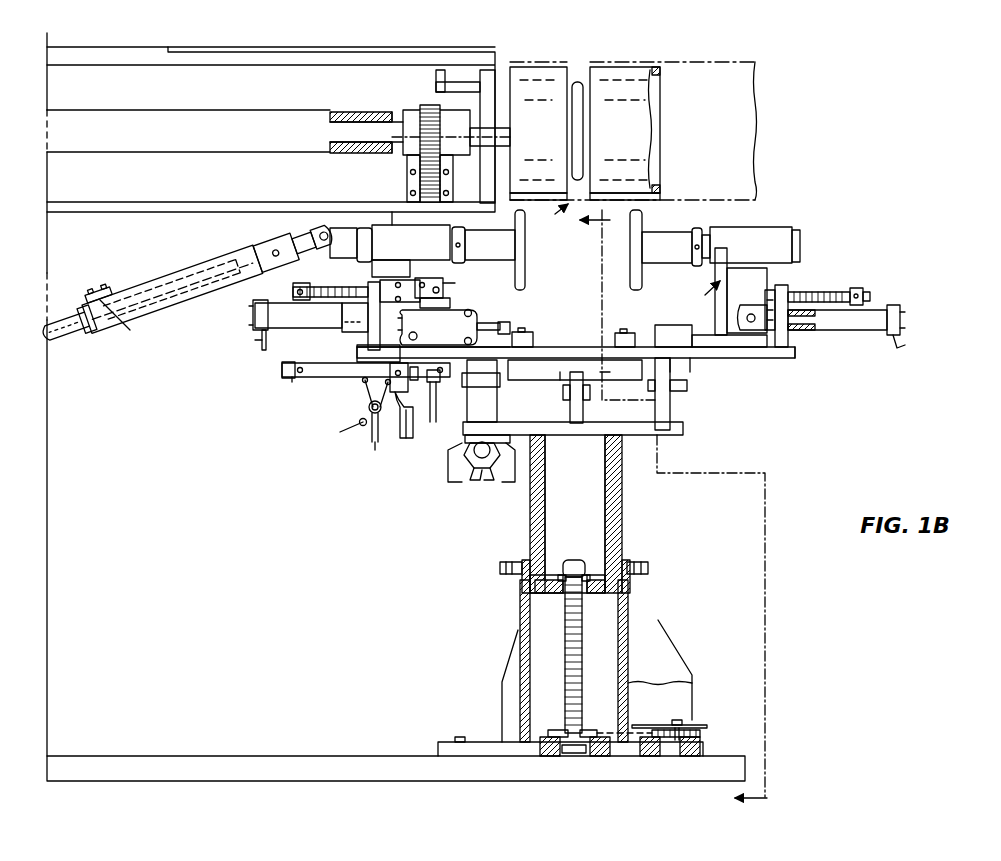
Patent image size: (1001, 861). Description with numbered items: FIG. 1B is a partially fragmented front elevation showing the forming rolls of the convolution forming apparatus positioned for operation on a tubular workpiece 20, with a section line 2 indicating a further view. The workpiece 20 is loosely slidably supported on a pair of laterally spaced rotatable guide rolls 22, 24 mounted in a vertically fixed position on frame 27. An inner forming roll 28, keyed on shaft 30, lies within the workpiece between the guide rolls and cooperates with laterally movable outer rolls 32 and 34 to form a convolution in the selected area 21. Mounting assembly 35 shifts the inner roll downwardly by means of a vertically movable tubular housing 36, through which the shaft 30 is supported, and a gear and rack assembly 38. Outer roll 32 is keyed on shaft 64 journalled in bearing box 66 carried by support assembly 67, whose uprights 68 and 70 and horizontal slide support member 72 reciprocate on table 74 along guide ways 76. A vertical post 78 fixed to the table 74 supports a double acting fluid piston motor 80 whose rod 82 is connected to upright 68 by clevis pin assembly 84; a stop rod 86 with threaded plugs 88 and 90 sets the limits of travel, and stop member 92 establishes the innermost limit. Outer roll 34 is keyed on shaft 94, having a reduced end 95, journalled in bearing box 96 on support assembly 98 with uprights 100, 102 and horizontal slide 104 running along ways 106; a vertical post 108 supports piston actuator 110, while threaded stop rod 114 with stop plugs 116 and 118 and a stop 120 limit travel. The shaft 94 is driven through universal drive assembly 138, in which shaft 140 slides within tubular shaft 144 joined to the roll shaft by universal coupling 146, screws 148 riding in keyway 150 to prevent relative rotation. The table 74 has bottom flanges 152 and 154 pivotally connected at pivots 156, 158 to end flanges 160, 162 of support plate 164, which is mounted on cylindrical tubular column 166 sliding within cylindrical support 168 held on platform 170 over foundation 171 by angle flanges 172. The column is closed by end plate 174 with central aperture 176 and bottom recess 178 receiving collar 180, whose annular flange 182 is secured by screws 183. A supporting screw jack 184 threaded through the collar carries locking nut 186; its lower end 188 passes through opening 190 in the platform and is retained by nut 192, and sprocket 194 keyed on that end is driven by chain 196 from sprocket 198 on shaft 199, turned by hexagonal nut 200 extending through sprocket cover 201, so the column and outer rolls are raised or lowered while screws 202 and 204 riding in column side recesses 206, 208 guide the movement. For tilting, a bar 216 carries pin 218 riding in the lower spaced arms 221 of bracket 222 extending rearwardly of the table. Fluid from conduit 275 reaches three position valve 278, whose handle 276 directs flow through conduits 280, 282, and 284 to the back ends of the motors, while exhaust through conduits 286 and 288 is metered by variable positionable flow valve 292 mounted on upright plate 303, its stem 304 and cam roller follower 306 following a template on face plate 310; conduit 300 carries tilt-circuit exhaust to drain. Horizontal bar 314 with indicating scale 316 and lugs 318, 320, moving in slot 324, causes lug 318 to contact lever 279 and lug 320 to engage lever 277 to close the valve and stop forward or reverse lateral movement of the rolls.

The section line 2 is at (682, 509).
The tubular workpiece 20 is at (742, 60).
The selected area 21 is at (551, 217).
The guide roll 22 is at (537, 115).
The guide roll 24 is at (606, 115).
The frame 27 is at (455, 50).
The inner forming roll 28 is at (580, 82).
The shaft 30 is at (368, 125).
The outer forming roll 32 is at (632, 272).
The outer roll 34 is at (527, 280).
The mounting assembly 35 is at (212, 103).
The tubular housing 36 is at (348, 113).
The gear and rack assembly 38 is at (430, 104).
The shaft 64 is at (667, 258).
The bearing box 66 is at (776, 232).
The support assembly 67 is at (700, 288).
The upright 68 is at (741, 300).
The upright 70 is at (727, 298).
The horizontal slide support member 72 is at (732, 360).
The table 74 is at (745, 350).
The guide ways 76 is at (664, 332).
The vertical post 78 is at (790, 292).
The double acting fluid piston motor 80 is at (857, 330).
The rod 82 is at (812, 320).
The clevis pin assembly 84 is at (755, 337).
The stop rod 86 is at (838, 291).
The threaded plug 88 is at (866, 291).
The threaded plug 90 is at (780, 288).
The stop member 92 is at (628, 333).
The shaft 94 is at (503, 253).
The reduced end 95 is at (360, 225).
The bearing box 96 is at (384, 225).
The support assembly 98 is at (452, 288).
The upright 100 is at (442, 246).
The upright 102 is at (428, 355).
The horizontal slide 104 is at (362, 351).
The ways 106 is at (512, 326).
The vertical post 108 is at (340, 336).
The piston actuator 110 is at (289, 325).
The threaded stop rod 114 is at (330, 287).
The stop plug 116 is at (386, 283).
The stop plug 118 is at (300, 283).
The stop 120 is at (535, 336).
The universal drive assembly 138 is at (122, 340).
The shaft 140 is at (64, 343).
The tubular shaft 144 is at (180, 272).
The universal coupling 146 is at (292, 230).
The screws 148 is at (97, 292).
The keyway 150 is at (77, 318).
The bottom flange 152 is at (674, 366).
The bottom flange 154 is at (490, 380).
The pivot 156 is at (688, 386).
The pivot 158 is at (437, 402).
The end flange 160 is at (671, 410).
The end flange 162 is at (488, 415).
The support plate 164 is at (670, 432).
The cylindrical tubular column 166 is at (561, 473).
The cylindrical support 168 is at (628, 625).
The platform 170 is at (706, 748).
The foundation 171 is at (320, 780).
The angle flanges 172 is at (670, 653).
The end plate 174 is at (556, 575).
The central aperture 176 is at (588, 575).
The bottom recess 178 is at (590, 596).
The collar 180 is at (605, 585).
The annular flange 182 is at (558, 595).
The screws 183 is at (528, 592).
The supporting screw jack 184 is at (583, 663).
The locking nut 186 is at (575, 560).
The lower end 188 is at (550, 752).
The opening 190 is at (590, 730).
The nut 192 is at (574, 754).
The sprocket 194 is at (555, 730).
The chain 196 is at (628, 750).
The sprocket 198 is at (702, 732).
The shaft 199 is at (676, 750).
The hexagonal nut 200 is at (677, 720).
The sprocket cover 201 is at (705, 725).
The screw 202 is at (632, 560).
The screw 204 is at (518, 560).
The column side recess 206 is at (622, 507).
The column side recess 208 is at (530, 507).
The bar 216 is at (585, 412).
The pin 218 is at (563, 392).
The lower spaced arms 221 is at (600, 371).
The bracket 222 is at (562, 370).
The conduit 275 is at (362, 440).
The valve handle 276 is at (360, 425).
The lever 277 is at (388, 420).
The three position valve 278 is at (368, 408).
The lever 279 is at (362, 396).
The conduit 280 is at (358, 424).
The conduit 282 is at (903, 347).
The conduit 284 is at (260, 342).
The conduit 286 is at (816, 359).
The conduit 288 is at (350, 303).
The variable positionable flow valve 292 is at (420, 328).
The conduit 300 is at (392, 430).
The upright plate 303 is at (492, 322).
The stem 304 is at (450, 302).
The cam roller follower 306 is at (432, 290).
The face plate 310 is at (375, 252).
The horizontal bar 314 is at (282, 372).
The indicating scale 316 is at (366, 380).
The lug 318 is at (294, 380).
The lug 320 is at (395, 405).
The slot 324 is at (575, 370).